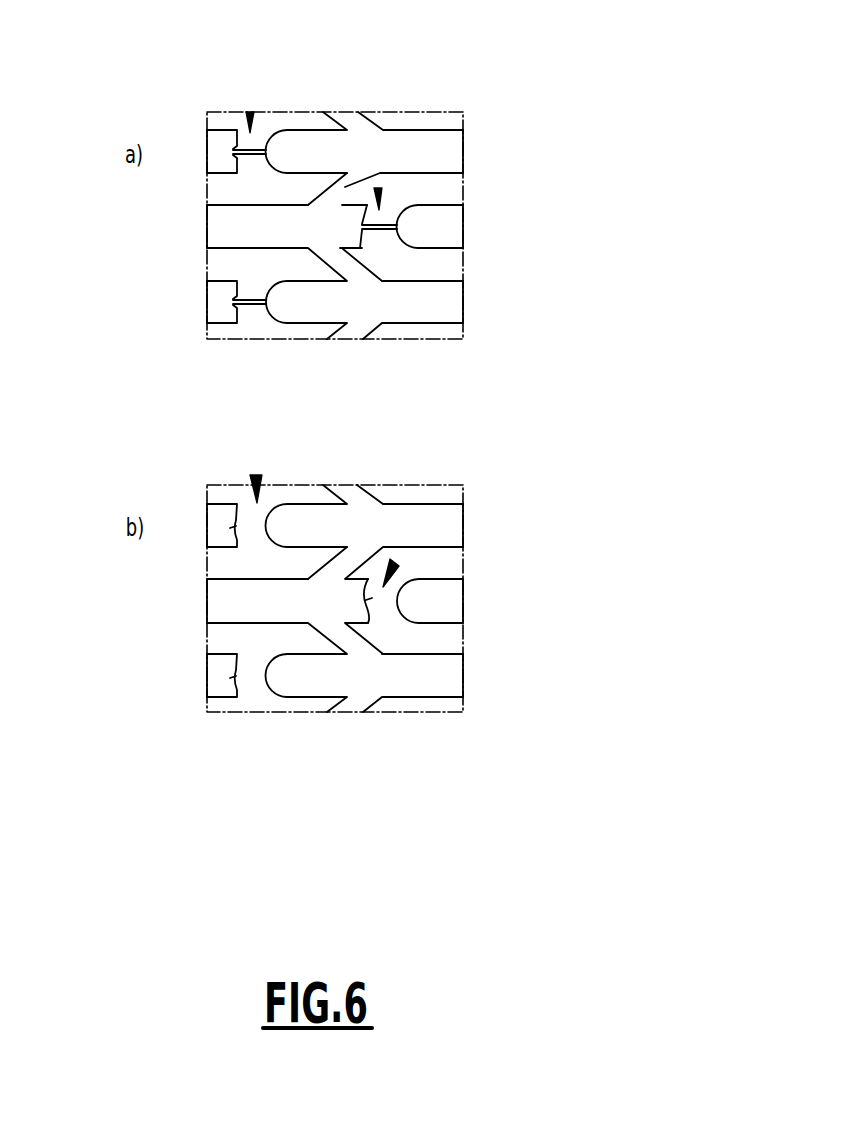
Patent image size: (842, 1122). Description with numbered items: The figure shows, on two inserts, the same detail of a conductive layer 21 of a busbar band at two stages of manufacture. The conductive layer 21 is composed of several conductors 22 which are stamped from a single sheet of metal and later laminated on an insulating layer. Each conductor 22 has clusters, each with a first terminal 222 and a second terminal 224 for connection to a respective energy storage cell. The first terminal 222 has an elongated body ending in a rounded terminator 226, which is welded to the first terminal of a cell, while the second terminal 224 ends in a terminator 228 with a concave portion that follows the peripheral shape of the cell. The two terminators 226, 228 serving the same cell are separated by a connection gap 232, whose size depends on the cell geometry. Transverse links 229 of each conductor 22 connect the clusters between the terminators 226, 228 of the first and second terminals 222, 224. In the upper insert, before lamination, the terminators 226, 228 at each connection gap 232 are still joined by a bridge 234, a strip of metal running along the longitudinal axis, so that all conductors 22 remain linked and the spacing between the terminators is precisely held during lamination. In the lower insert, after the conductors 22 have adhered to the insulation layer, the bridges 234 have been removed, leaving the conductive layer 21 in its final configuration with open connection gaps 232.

The conductive layer 21 is at (410, 407).
The conductor 22 is at (338, 429).
The first terminal 222 is at (312, 357).
The second terminal 224 is at (423, 428).
The terminator 226 is at (351, 401).
The terminator 228 is at (284, 404).
The transverse link 229 is at (256, 336).
The connection gap 232 is at (322, 295).
The bridge 234 is at (331, 227).